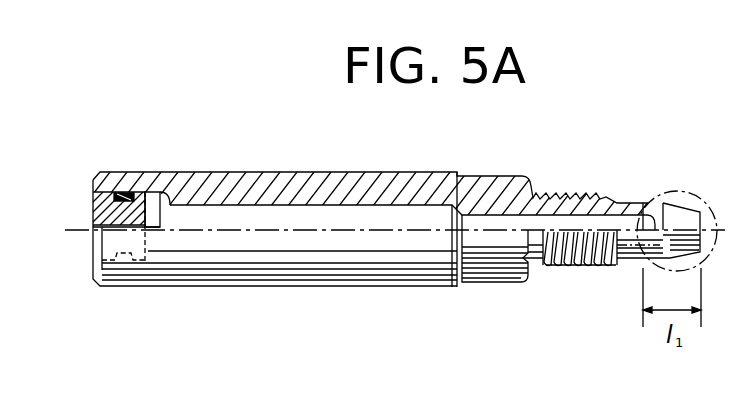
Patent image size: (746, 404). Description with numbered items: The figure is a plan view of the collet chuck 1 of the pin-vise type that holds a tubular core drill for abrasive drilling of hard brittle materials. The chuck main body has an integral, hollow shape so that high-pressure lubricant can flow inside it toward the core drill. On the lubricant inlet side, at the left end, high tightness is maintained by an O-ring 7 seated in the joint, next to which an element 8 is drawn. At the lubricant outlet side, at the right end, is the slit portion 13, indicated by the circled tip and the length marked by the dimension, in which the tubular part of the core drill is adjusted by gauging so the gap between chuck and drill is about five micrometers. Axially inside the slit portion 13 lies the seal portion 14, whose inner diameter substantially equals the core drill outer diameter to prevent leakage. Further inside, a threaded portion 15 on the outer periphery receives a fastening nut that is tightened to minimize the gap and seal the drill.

The collet chuck 1 is at (306, 287).
The O-ring 7 is at (126, 196).
The nut 8 is at (93, 197).
The slit portion 13 is at (690, 192).
The seal portion 14 is at (636, 232).
The threaded portion 15 is at (581, 268).